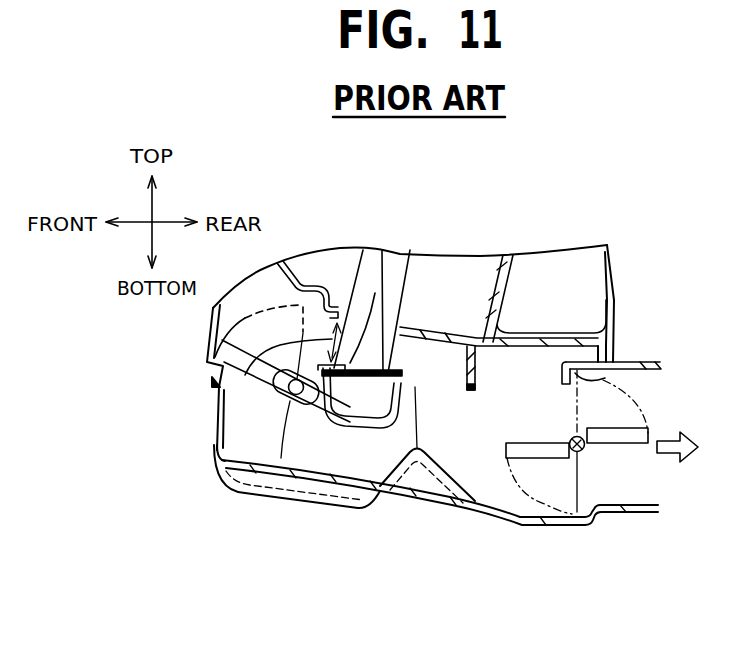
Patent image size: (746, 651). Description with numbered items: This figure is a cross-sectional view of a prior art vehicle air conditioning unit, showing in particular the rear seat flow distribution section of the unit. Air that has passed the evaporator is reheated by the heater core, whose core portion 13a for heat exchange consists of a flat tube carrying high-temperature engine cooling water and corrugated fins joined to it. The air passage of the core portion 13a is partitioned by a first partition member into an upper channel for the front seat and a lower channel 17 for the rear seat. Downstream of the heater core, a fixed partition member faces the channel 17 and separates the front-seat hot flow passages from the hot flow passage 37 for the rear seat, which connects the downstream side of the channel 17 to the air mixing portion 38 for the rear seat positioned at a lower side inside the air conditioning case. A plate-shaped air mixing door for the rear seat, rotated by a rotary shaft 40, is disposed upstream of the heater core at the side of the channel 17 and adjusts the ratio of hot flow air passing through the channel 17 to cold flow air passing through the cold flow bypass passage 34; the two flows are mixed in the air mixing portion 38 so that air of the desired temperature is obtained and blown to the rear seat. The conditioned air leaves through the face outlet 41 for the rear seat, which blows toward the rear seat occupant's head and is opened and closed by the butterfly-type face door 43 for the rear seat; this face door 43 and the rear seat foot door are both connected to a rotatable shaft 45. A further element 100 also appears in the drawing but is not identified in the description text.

The channel for the rear seat 17 is at (215, 464).
The core portion for heat exchange 13a is at (267, 355).
The rotary shaft 40 is at (272, 400).
The cold flow bypass passage 34 is at (309, 452).
The hot flow passage for the rear seat 37 is at (417, 450).
The air mixing portion for the rear seat 38 is at (470, 433).
The rotatable shaft 45 is at (578, 452).
The face outlet for the rear seat 41 is at (608, 492).
The face door for the rear seat 43 is at (611, 440).
The prior art seat 100 is at (572, 377).